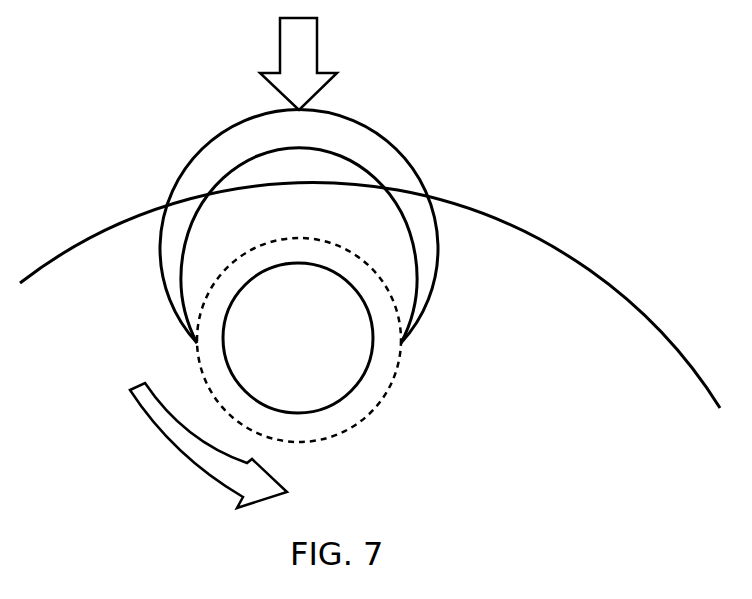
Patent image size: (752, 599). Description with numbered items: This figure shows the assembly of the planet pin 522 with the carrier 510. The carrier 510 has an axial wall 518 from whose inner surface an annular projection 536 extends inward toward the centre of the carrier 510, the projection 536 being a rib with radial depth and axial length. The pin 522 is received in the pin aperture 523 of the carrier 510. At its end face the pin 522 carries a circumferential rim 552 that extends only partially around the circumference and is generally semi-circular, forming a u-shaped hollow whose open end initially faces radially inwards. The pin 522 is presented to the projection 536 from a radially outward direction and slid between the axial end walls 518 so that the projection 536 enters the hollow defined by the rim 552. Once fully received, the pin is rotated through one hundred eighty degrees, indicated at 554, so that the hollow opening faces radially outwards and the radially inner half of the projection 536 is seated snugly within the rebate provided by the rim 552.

The carrier 510 is at (135, 188).
The axial wall 518 is at (532, 366).
The planet pin 522 is at (455, 154).
The pin aperture 523 is at (317, 364).
The annular projection 536 is at (217, 353).
The circumferential rim 552 is at (367, 153).
The rotation through 180 degrees 554 is at (187, 443).